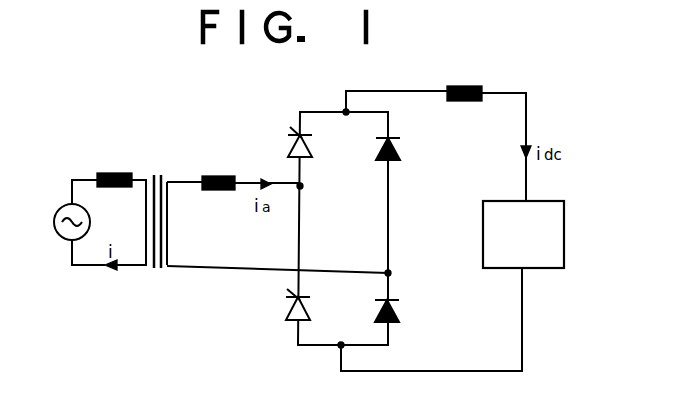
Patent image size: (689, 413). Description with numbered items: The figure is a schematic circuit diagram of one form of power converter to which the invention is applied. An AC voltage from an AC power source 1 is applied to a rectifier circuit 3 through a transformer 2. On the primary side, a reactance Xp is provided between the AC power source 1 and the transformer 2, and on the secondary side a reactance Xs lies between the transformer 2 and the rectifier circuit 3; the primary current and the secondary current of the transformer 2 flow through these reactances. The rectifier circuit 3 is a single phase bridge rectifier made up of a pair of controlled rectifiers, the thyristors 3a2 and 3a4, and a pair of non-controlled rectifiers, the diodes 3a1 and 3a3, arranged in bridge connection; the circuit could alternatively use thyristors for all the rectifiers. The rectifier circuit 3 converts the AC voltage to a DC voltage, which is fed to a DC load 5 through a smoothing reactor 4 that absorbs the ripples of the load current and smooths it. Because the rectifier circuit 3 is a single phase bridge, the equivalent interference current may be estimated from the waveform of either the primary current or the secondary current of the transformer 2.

The AC power source 1 is at (58, 210).
The transformer 2 is at (166, 167).
The rectifier circuit 3 is at (329, 86).
The diode 3a1 is at (399, 322).
The thyristor 3a2 is at (310, 320).
The diode 3a3 is at (400, 160).
The thyristor 3a4 is at (312, 157).
The smoothing reactor 4 is at (476, 86).
The DC load 5 is at (564, 203).
The reactance Xp is at (116, 173).
The reactance Xs is at (219, 175).